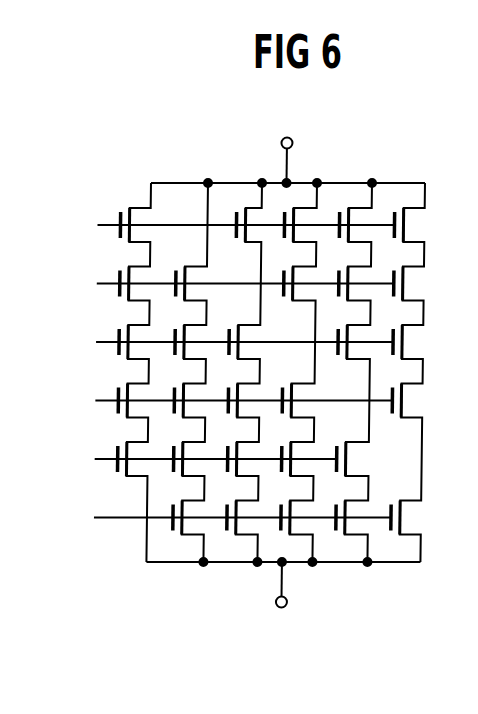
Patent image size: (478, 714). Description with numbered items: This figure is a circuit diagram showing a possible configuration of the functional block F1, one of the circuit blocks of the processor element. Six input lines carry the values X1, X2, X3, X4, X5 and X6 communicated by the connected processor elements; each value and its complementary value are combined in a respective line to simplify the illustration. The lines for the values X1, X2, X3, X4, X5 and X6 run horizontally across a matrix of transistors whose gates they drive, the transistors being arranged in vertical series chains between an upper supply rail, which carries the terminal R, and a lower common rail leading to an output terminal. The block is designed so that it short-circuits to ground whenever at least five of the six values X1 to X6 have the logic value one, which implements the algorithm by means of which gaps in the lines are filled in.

The functional block R is at (286, 357).
The value X1 is at (231, 224).
The value X2 is at (231, 283).
The value X3 is at (230, 341).
The value X4 is at (229, 400).
The value X5 is at (200, 458).
The value X6 is at (228, 517).